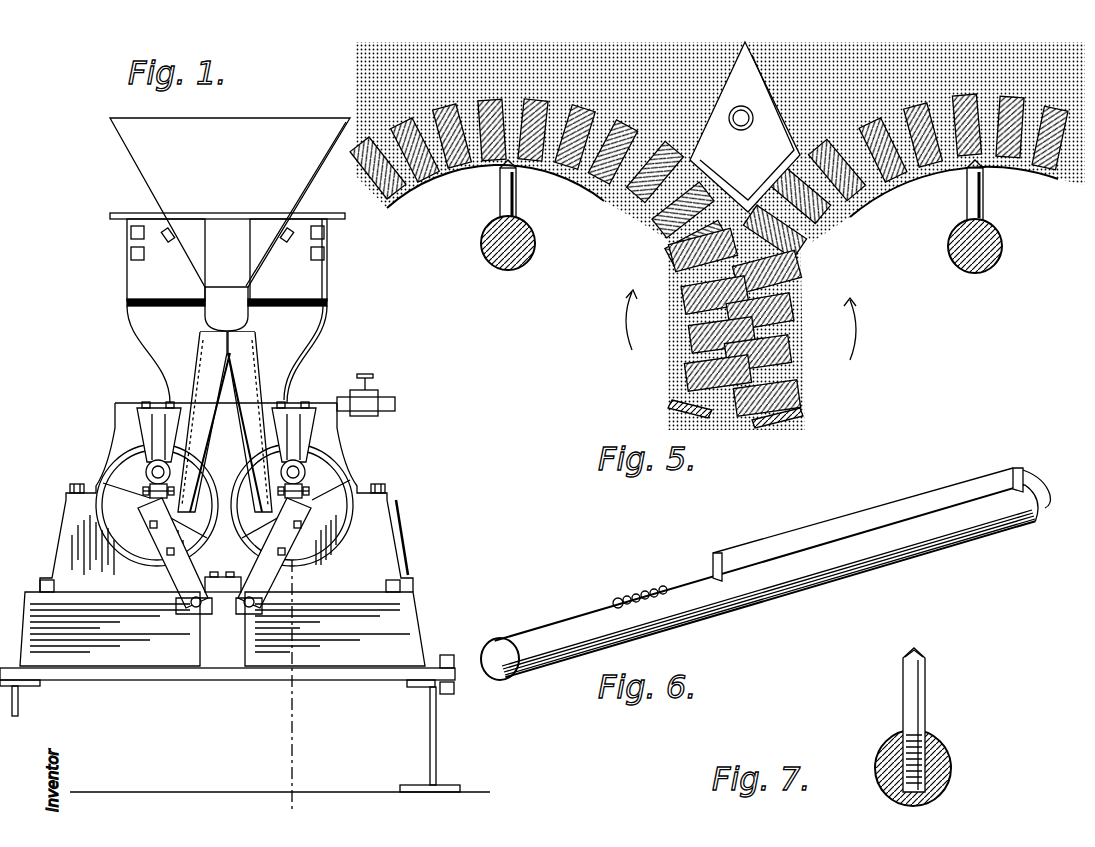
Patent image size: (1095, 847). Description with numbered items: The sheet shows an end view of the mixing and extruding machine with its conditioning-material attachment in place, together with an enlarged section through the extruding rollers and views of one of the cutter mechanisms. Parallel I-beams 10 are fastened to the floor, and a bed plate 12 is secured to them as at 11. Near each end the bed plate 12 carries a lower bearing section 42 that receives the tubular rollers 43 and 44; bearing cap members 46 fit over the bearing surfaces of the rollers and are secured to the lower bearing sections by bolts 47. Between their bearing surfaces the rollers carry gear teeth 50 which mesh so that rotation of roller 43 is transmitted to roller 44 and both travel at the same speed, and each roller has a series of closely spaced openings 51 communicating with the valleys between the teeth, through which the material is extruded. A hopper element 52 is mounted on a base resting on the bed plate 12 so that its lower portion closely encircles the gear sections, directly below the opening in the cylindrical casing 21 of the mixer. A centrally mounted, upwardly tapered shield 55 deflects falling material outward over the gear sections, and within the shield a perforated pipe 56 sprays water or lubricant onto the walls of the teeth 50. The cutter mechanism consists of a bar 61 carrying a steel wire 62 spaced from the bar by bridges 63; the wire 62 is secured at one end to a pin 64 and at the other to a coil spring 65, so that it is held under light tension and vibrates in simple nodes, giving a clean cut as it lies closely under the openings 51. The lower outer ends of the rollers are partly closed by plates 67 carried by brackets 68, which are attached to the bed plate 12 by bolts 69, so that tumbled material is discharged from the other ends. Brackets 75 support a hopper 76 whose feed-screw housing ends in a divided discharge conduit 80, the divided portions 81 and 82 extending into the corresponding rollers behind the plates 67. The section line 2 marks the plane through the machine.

In FIG. 1, the section line 2 is at (298, 396).
In FIG. 1, the I-beams 10 is at (30, 690).
In FIG. 1, the fastening of bed plate to I-beams 11 is at (446, 656).
In FIG. 1, the bed plate 12 is at (420, 612).
In FIG. 1, the cylindrical casing 21 is at (330, 318).
In FIG. 1, the lower bearing section 42 is at (386, 527).
In FIG. 1, the roller 43 is at (348, 480).
In FIG. 1, the roller 44 is at (142, 490).
In FIG. 1, the bearing cap member 46 is at (340, 436).
In FIG. 1, the bolts 47 is at (72, 483).
In FIG. 5, the gear teeth 50 is at (383, 158).
In FIG. 5, the openings 51 is at (606, 235).
In FIG. 1, the hopper element 52 is at (117, 410).
In FIG. 5, the shield 55 is at (745, 127).
In FIG. 5, the perforated pipe or nozzle 56 is at (746, 130).
In FIG. 5, the bar 61 is at (962, 268).
In FIG. 6, the bar 61 is at (896, 563).
In FIG. 7, the bar 61 is at (940, 758).
In FIG. 5, the steel wire 62 is at (983, 180).
In FIG. 6, the steel wire 62 is at (886, 510).
In FIG. 7, the steel wire 62 is at (916, 652).
In FIG. 5, the bridges 63 is at (984, 205).
In FIG. 6, the bridges 63 is at (726, 562).
In FIG. 7, the bridges 63 is at (920, 712).
In FIG. 6, the pin 64 is at (1050, 505).
In FIG. 6, the coil spring 65 is at (662, 585).
In FIG. 1, the plates 67 is at (148, 497).
In FIG. 1, the brackets 68 is at (176, 570).
In FIG. 1, the bolts 69 is at (195, 612).
In FIG. 1, the brackets 75 is at (262, 250).
In FIG. 1, the hopper 76 is at (230, 224).
In FIG. 1, the divided discharge conduit 80 is at (250, 331).
In FIG. 1, the divided portion 81 is at (258, 396).
In FIG. 1, the divided portion 82 is at (195, 398).